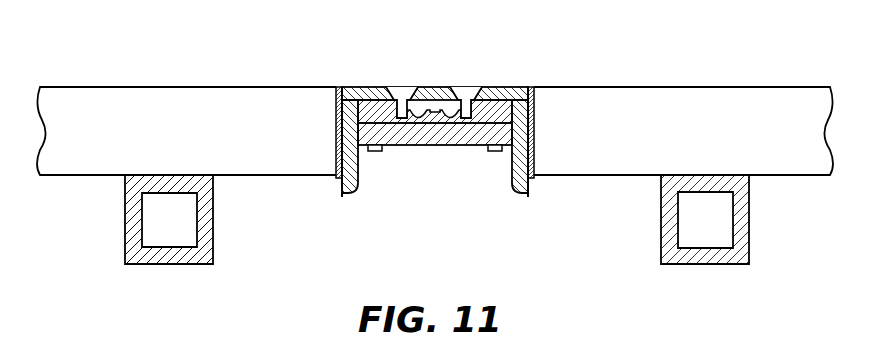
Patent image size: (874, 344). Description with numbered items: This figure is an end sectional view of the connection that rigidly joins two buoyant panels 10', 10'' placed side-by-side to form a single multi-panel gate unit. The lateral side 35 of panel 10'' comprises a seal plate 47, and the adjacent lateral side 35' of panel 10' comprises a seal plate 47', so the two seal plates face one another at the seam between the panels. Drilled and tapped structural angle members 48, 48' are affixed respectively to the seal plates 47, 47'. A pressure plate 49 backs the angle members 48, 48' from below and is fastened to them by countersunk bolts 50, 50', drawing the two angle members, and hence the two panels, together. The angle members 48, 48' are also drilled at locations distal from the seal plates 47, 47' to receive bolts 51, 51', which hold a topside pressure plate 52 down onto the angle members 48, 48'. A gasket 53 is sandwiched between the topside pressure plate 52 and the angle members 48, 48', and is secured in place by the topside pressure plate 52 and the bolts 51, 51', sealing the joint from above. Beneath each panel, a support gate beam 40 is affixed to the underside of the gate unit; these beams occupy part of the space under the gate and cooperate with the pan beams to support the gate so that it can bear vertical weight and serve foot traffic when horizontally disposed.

The buoyant panel 10' is at (186, 106).
The buoyant panel 10'' is at (683, 106).
The lateral side 35 is at (547, 110).
The lateral side 35' is at (297, 120).
The support gate beam 40 is at (192, 257).
The seal plate 47 is at (525, 108).
The seal plate 47' is at (330, 109).
The structural angle member 48 is at (524, 176).
The structural angle member 48' is at (350, 176).
The pressure plate 49 is at (440, 146).
The countersunk bolt 50 is at (489, 183).
The countersunk bolt 50' is at (380, 183).
The bolt 51 is at (466, 75).
The bolt 51' is at (403, 75).
The topside pressure plate 52 is at (437, 100).
The gasket 53 is at (362, 95).